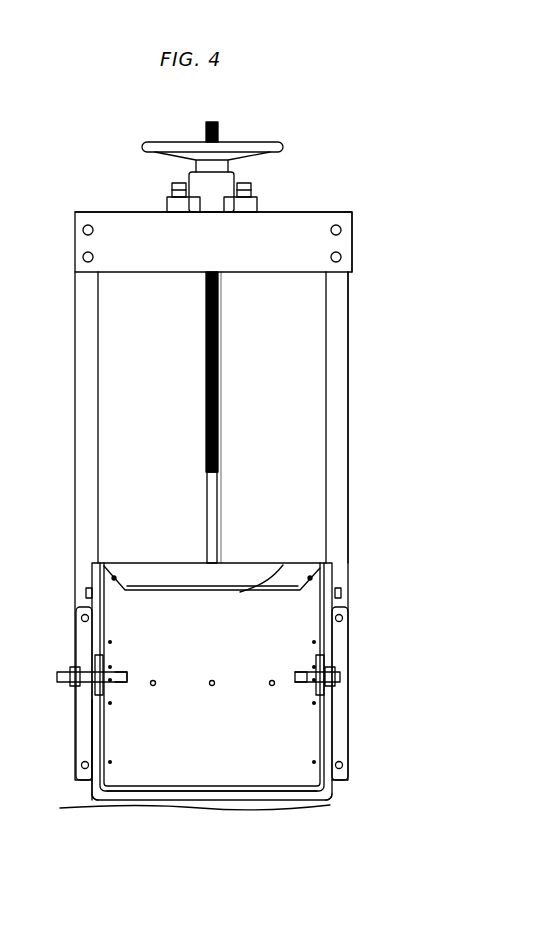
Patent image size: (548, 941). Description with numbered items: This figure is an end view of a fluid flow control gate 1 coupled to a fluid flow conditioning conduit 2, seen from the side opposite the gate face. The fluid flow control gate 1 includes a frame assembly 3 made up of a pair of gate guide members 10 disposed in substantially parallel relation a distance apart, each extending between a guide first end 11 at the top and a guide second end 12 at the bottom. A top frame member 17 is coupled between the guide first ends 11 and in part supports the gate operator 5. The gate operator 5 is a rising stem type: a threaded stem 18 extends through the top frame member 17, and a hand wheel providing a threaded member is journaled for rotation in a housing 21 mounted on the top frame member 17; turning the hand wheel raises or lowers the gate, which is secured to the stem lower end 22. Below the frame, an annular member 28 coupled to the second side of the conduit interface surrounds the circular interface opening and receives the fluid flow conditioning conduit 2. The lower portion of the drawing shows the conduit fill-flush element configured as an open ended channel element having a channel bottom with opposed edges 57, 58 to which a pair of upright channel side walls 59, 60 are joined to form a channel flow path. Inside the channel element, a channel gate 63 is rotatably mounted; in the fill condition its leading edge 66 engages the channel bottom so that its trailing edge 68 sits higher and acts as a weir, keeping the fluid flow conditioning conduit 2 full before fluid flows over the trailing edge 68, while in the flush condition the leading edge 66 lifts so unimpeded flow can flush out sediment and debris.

The fluid flow control gate 1 is at (356, 209).
The fluid flow conditioning conduit 2 is at (330, 582).
The frame assembly 3 is at (355, 352).
The gate operator 5 is at (274, 138).
The gate guide members 10 is at (77, 470).
The guide first end 11 is at (76, 256).
The guide second end 12 is at (73, 753).
The top frame member 17 is at (123, 228).
The threaded stem 18 is at (224, 360).
The housing 21 is at (226, 183).
The stem lower end 22 is at (213, 550).
The annular member 28 is at (200, 588).
The opposed edge of channel bottom 57 is at (93, 800).
The opposed edge of channel bottom 58 is at (320, 800).
The channel side wall 59 is at (97, 645).
The channel side wall 60 is at (322, 640).
The channel gate 63 is at (165, 768).
The leading edge 66 is at (260, 796).
The trailing edge 68 is at (312, 580).